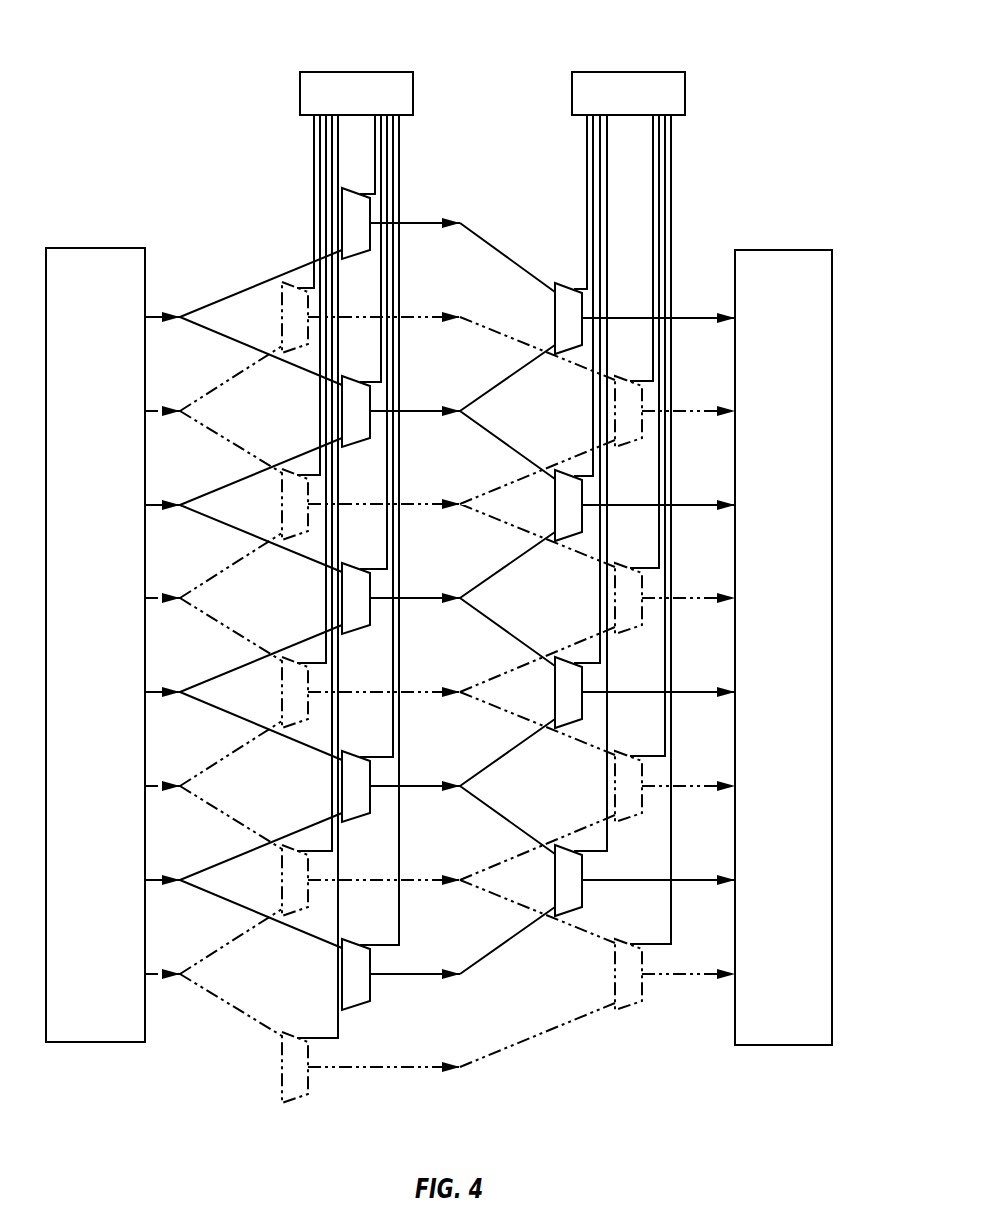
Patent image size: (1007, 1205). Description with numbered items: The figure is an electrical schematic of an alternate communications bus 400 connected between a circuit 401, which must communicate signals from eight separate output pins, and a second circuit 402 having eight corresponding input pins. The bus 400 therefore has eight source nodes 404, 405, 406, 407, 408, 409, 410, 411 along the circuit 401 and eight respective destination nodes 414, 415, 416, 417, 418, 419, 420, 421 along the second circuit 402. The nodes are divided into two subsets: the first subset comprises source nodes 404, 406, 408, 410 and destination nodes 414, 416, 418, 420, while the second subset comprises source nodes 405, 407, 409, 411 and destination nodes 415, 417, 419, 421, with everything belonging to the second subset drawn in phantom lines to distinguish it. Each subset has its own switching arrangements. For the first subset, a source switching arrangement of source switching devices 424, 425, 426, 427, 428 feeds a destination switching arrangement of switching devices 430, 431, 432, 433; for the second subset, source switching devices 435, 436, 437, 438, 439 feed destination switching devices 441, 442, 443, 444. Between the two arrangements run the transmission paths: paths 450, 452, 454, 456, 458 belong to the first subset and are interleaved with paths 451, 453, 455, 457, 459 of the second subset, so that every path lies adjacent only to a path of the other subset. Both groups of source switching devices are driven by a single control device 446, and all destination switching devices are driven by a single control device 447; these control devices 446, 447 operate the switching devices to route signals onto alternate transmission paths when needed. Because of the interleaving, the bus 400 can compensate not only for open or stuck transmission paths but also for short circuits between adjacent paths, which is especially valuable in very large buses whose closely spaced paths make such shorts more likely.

The bus 400 is at (128, 92).
The circuit 401 is at (116, 647).
The second circuit 402 is at (805, 647).
The source node 404 is at (153, 320).
The source node 405 is at (153, 414).
The source node 406 is at (153, 508).
The source node 407 is at (153, 601).
The source node 408 is at (153, 695).
The source node 409 is at (153, 789).
The source node 410 is at (153, 883).
The source node 411 is at (153, 977).
The destination node 414 is at (710, 322).
The destination node 415 is at (710, 415).
The destination node 416 is at (710, 509).
The destination node 417 is at (710, 602).
The destination node 418 is at (710, 696).
The destination node 419 is at (710, 790).
The destination node 420 is at (710, 884).
The destination node 421 is at (710, 978).
The source switching device 424 is at (350, 218).
The source switching device 425 is at (360, 400).
The source switching device 426 is at (362, 593).
The source switching device 427 is at (362, 781).
The source switching device 428 is at (357, 987).
The destination switching device 430 is at (566, 320).
The destination switching device 431 is at (564, 520).
The destination switching device 432 is at (564, 707).
The destination switching device 433 is at (562, 893).
The source switching device 435 is at (293, 328).
The source switching device 436 is at (293, 516).
The source switching device 437 is at (293, 704).
The source switching device 438 is at (293, 892).
The source switching device 439 is at (293, 1079).
The destination switching device 441 is at (627, 424).
The destination switching device 442 is at (627, 611).
The destination switching device 443 is at (627, 799).
The destination switching device 444 is at (621, 970).
The control device 446 is at (370, 72).
The control device 447 is at (620, 72).
The transmission path 450 is at (410, 225).
The transmission path 451 is at (410, 319).
The transmission path 452 is at (410, 413).
The transmission path 453 is at (410, 506).
The transmission path 454 is at (410, 600).
The transmission path 455 is at (410, 694).
The transmission path 456 is at (410, 788).
The transmission path 457 is at (410, 882).
The transmission path 458 is at (410, 976).
The transmission path 459 is at (410, 1069).